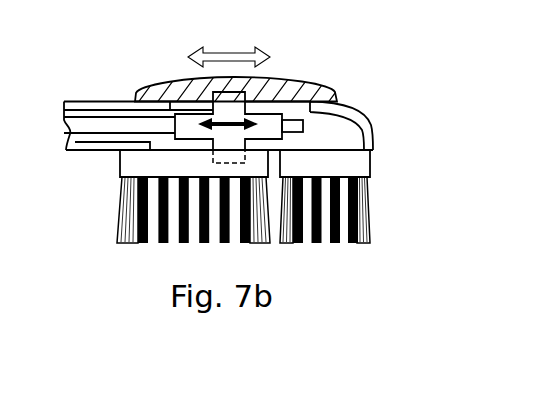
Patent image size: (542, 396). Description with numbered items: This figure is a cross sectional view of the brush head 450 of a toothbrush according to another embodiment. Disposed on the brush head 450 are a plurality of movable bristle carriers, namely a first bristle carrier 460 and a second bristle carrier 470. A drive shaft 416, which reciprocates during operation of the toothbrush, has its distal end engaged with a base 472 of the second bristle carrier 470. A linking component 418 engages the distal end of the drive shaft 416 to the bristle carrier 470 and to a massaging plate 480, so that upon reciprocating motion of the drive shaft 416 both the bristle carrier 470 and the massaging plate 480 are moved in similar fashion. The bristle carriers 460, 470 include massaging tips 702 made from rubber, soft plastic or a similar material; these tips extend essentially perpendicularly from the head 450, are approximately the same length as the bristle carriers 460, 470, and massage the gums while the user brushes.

The drive shaft 416 is at (75, 127).
The linking component 418 is at (185, 123).
The massaging plate 480 is at (297, 92).
The brush head 450 is at (338, 126).
The base 472 is at (119, 150).
The second bristle carrier 470 is at (123, 222).
The first bristle carrier 460 is at (363, 224).
The massaging tips 702 is at (197, 244).